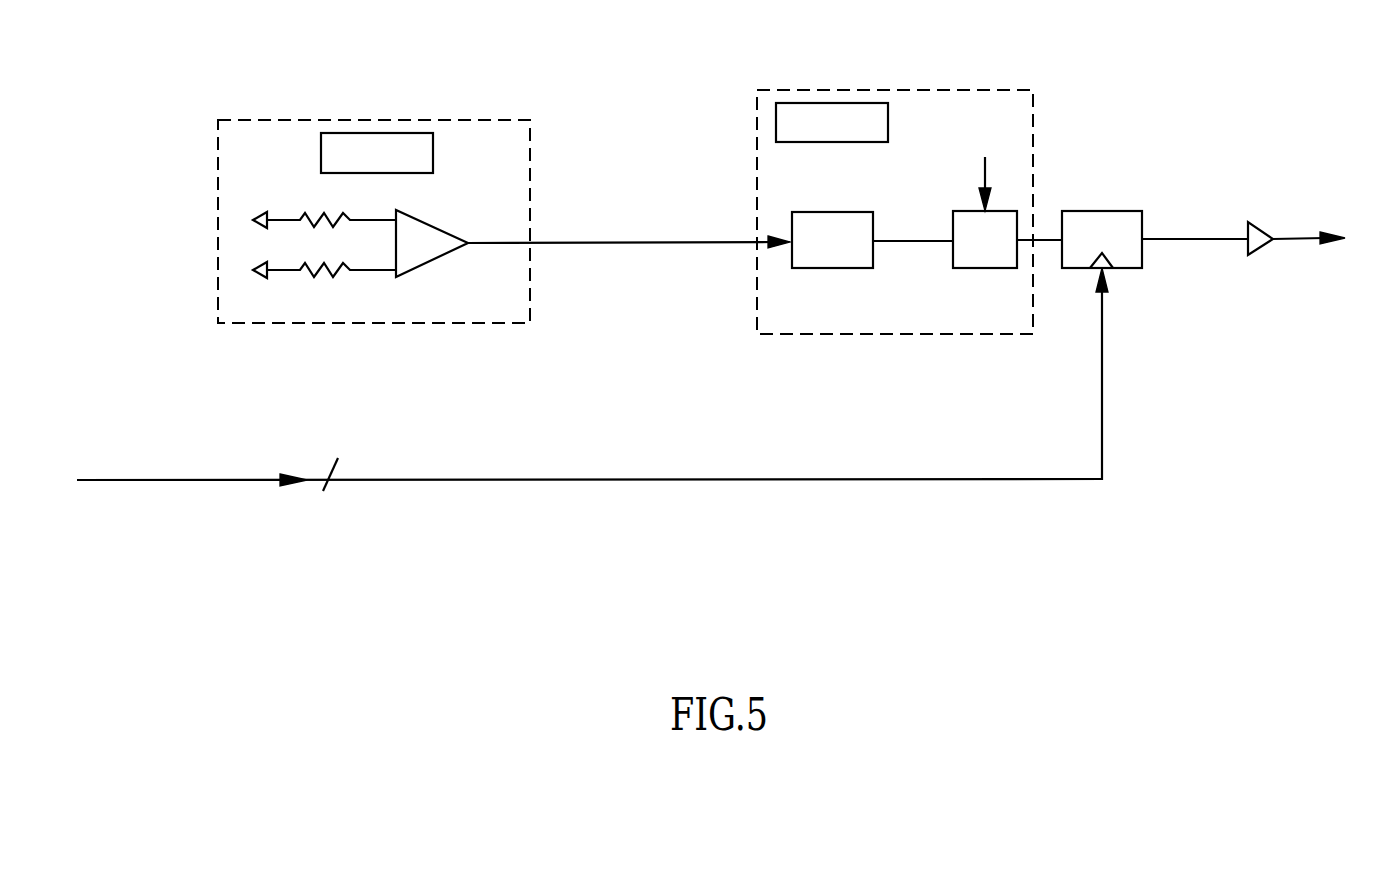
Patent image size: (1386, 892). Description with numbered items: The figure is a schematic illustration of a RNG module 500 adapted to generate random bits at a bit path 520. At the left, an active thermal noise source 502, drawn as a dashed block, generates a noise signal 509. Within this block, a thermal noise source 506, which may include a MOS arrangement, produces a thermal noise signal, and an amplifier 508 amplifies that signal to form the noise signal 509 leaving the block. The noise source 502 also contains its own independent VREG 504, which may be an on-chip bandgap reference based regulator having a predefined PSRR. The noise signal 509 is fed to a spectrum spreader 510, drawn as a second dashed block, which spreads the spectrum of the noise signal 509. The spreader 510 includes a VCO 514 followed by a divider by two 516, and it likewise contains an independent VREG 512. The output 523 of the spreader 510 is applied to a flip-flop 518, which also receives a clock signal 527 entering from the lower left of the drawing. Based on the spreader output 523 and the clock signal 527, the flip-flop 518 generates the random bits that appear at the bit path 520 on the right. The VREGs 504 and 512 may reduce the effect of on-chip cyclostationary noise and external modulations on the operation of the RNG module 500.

The RNG module 500 is at (1280, 567).
The active thermal noise source 502 is at (420, 118).
The VREG 504 is at (433, 150).
The thermal noise source 506 is at (337, 270).
The amplifier 508 is at (423, 223).
The noise signal 509 is at (605, 242).
The spectrum spreader 510 is at (978, 88).
The VREG 512 is at (823, 102).
The VCO 514 is at (827, 268).
The divider by two 516 is at (980, 268).
The flip-flop 518 is at (1105, 211).
The bit path 520 is at (1287, 238).
The output of spreader 523 is at (1043, 233).
The clock signal 527 is at (620, 478).